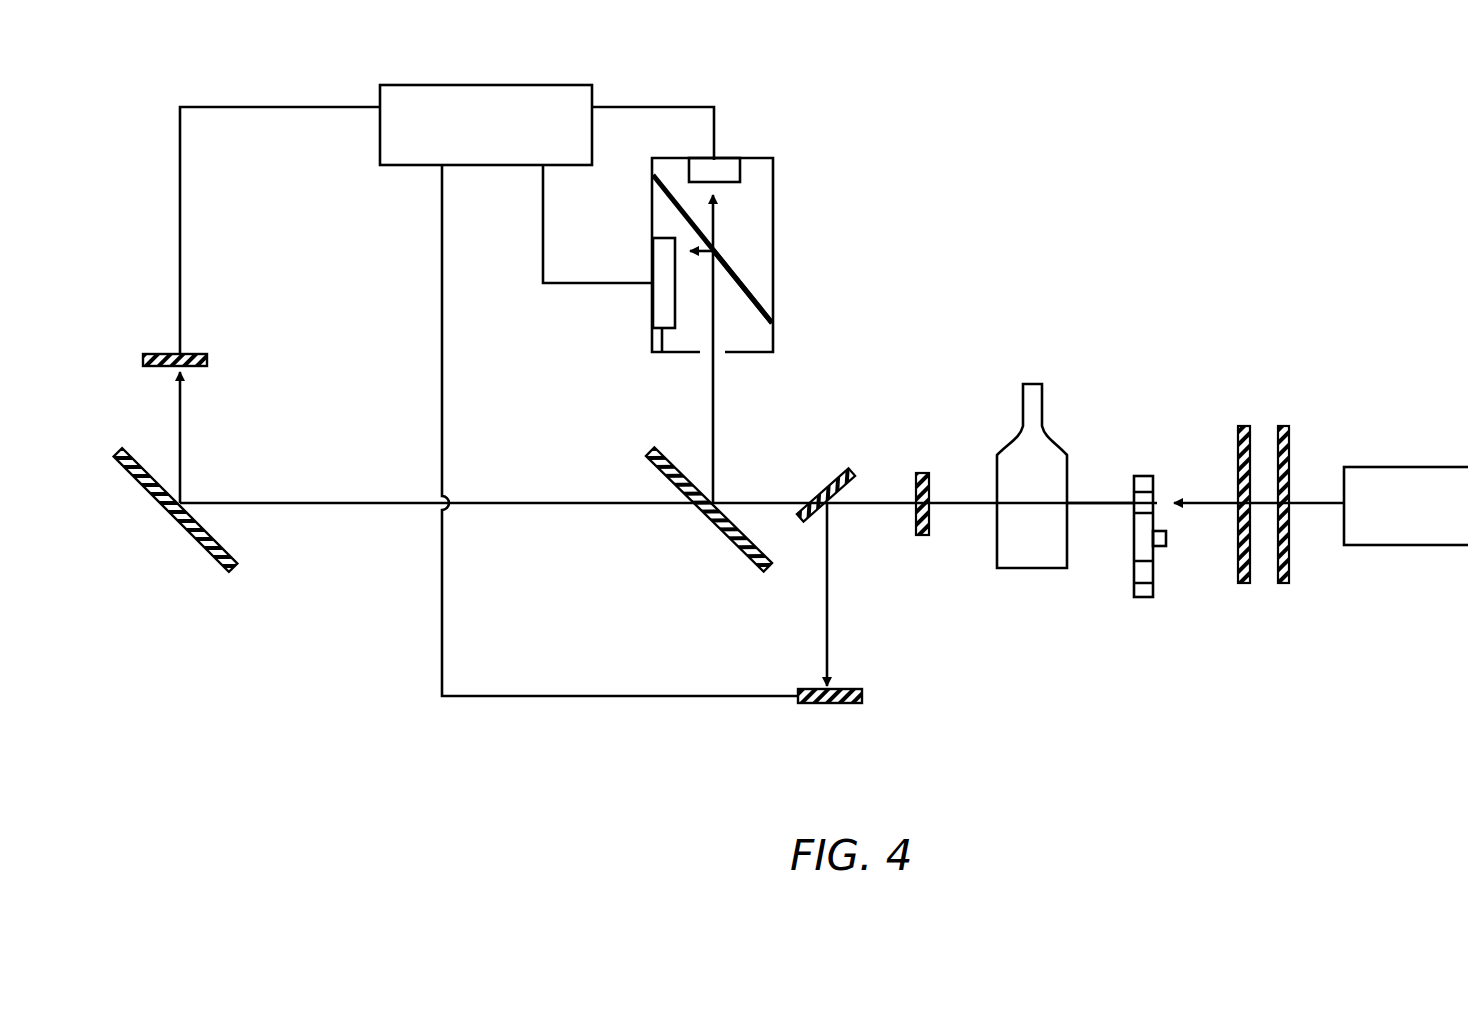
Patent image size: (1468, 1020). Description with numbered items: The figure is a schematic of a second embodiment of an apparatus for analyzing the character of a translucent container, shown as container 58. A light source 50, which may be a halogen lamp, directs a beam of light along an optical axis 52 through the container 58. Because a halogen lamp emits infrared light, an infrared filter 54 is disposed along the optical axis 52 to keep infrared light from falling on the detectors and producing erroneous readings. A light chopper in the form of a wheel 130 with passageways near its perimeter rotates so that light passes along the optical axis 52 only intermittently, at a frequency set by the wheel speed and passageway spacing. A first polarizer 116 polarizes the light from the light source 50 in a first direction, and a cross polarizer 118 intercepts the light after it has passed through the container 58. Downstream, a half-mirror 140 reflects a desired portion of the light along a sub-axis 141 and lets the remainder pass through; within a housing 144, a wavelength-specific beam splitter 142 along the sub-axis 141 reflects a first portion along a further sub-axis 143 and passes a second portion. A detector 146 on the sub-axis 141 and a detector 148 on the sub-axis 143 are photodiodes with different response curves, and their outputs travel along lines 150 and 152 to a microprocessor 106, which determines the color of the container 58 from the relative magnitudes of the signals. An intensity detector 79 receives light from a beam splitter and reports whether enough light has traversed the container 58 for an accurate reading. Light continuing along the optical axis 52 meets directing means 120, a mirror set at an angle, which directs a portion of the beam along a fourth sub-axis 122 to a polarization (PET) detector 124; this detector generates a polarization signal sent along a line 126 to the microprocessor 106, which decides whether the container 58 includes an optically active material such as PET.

The light source 50 is at (1418, 467).
The optical axis 52 is at (1100, 500).
The infrared filter 54 is at (1283, 425).
The container 58 is at (1033, 383).
The intensity detector 79 is at (822, 705).
The microprocessor 106 is at (483, 85).
The first polarizer 116 is at (1243, 584).
The cross polarizer 118 is at (925, 472).
The directing means 120 is at (205, 555).
The fourth sub-axis 122 is at (181, 447).
The polarization (PET) detector 124 is at (160, 353).
The line 126 is at (181, 238).
The wheel 130 is at (1145, 598).
The half-mirror 140 is at (735, 545).
The sub-axis 141 is at (716, 223).
The wavelength-specific beam splitter 142 is at (737, 283).
The sub-axis 143 is at (703, 248).
The detector housing 144 is at (773, 349).
The detector 146 is at (741, 172).
The detector 148 is at (662, 352).
The line 150 is at (668, 103).
The line 152 is at (583, 284).